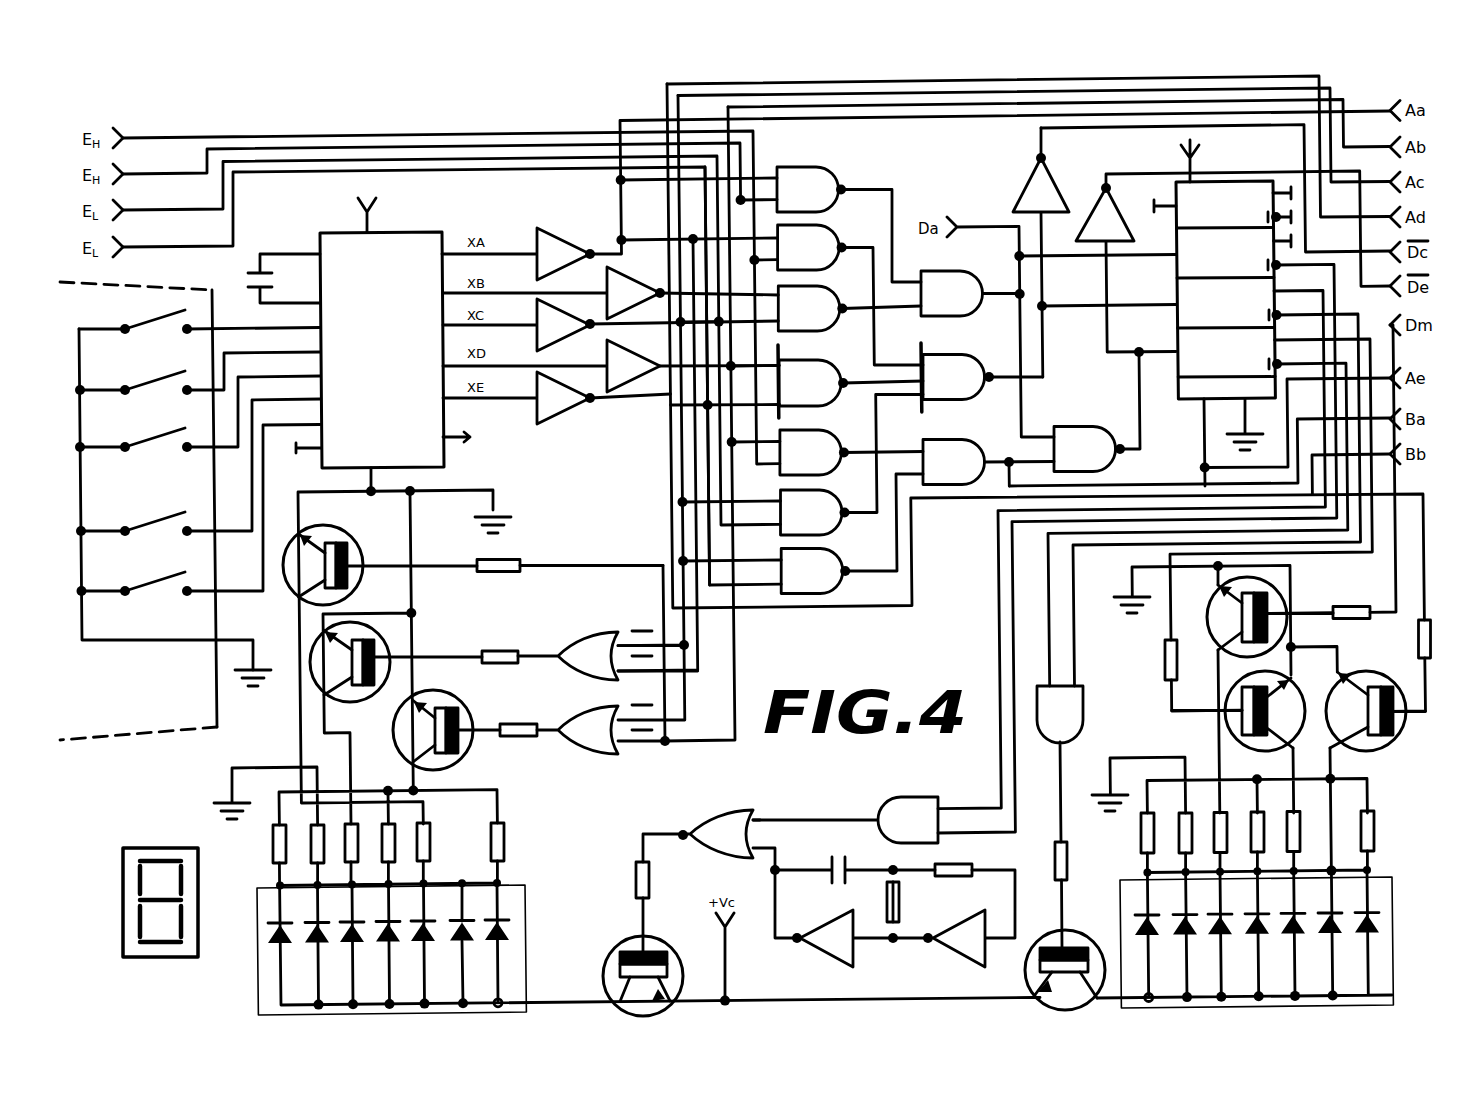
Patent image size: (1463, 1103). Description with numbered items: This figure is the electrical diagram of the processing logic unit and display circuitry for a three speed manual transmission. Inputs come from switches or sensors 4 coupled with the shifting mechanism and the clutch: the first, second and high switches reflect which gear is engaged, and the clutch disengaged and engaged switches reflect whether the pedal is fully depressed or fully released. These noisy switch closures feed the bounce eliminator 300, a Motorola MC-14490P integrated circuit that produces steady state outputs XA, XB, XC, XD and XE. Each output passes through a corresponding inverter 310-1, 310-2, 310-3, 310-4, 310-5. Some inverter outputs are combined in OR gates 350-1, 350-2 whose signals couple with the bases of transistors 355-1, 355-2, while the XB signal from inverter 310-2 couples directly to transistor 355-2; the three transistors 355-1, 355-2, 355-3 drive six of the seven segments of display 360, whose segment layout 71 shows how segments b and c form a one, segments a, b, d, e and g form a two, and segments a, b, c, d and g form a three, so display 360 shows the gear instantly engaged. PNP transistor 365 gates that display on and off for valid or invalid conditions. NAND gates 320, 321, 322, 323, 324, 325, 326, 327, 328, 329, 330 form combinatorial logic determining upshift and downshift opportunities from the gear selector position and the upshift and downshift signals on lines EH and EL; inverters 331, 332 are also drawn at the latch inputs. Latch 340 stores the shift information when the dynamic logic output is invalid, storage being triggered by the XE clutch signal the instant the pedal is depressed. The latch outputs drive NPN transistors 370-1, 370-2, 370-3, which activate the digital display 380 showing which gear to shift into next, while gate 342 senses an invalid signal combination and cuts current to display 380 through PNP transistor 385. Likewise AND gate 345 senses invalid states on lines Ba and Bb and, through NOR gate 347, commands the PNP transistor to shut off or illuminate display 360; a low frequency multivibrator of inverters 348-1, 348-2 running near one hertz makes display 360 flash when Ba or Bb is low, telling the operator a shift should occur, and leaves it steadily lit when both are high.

The switches or sensors 4 is at (117, 668).
The seven segment layout 71 is at (112, 877).
The bounce eliminator 300 is at (410, 238).
The inverter 310-1 is at (545, 240).
The inverter 310-2 is at (628, 285).
The inverter 310-3 is at (555, 335).
The inverter 310-4 is at (625, 380).
The inverter 310-5 is at (568, 410).
The NAND gate 320 is at (822, 186).
The NAND gate 321 is at (826, 245).
The NAND gate 322 is at (826, 305).
The NAND gate 323 is at (824, 376).
The NAND gate 324 is at (824, 446).
The NAND gate 325 is at (826, 507).
The NAND gate 326 is at (828, 568).
The NAND gate 327 is at (952, 288).
The NAND gate 328 is at (968, 450).
The NAND gate 329 is at (958, 368).
The NAND gate 330 is at (1076, 430).
The inverter 331 is at (1035, 192).
The inverter 332 is at (1097, 210).
The latch 340 is at (1228, 192).
The gate 342 is at (1072, 702).
The AND gate 345 is at (900, 803).
The NOR gate 347 is at (715, 818).
The inverter 348-1 is at (832, 928).
The inverter 348-2 is at (970, 924).
The OR gate 350-1 is at (598, 640).
The OR gate 350-2 is at (598, 745).
The transistor 355-1 is at (382, 650).
The transistor 355-2 is at (375, 520).
The transistor 355-3 is at (462, 720).
The display 360 is at (530, 895).
The PNP transistor 365 is at (608, 968).
The NPN transistor 370-1 is at (1352, 740).
The NPN transistor 370-2 is at (1270, 600).
The NPN transistor 370-3 is at (1230, 724).
The digital display 380 is at (1117, 885).
The PNP transistor 385 is at (1075, 940).